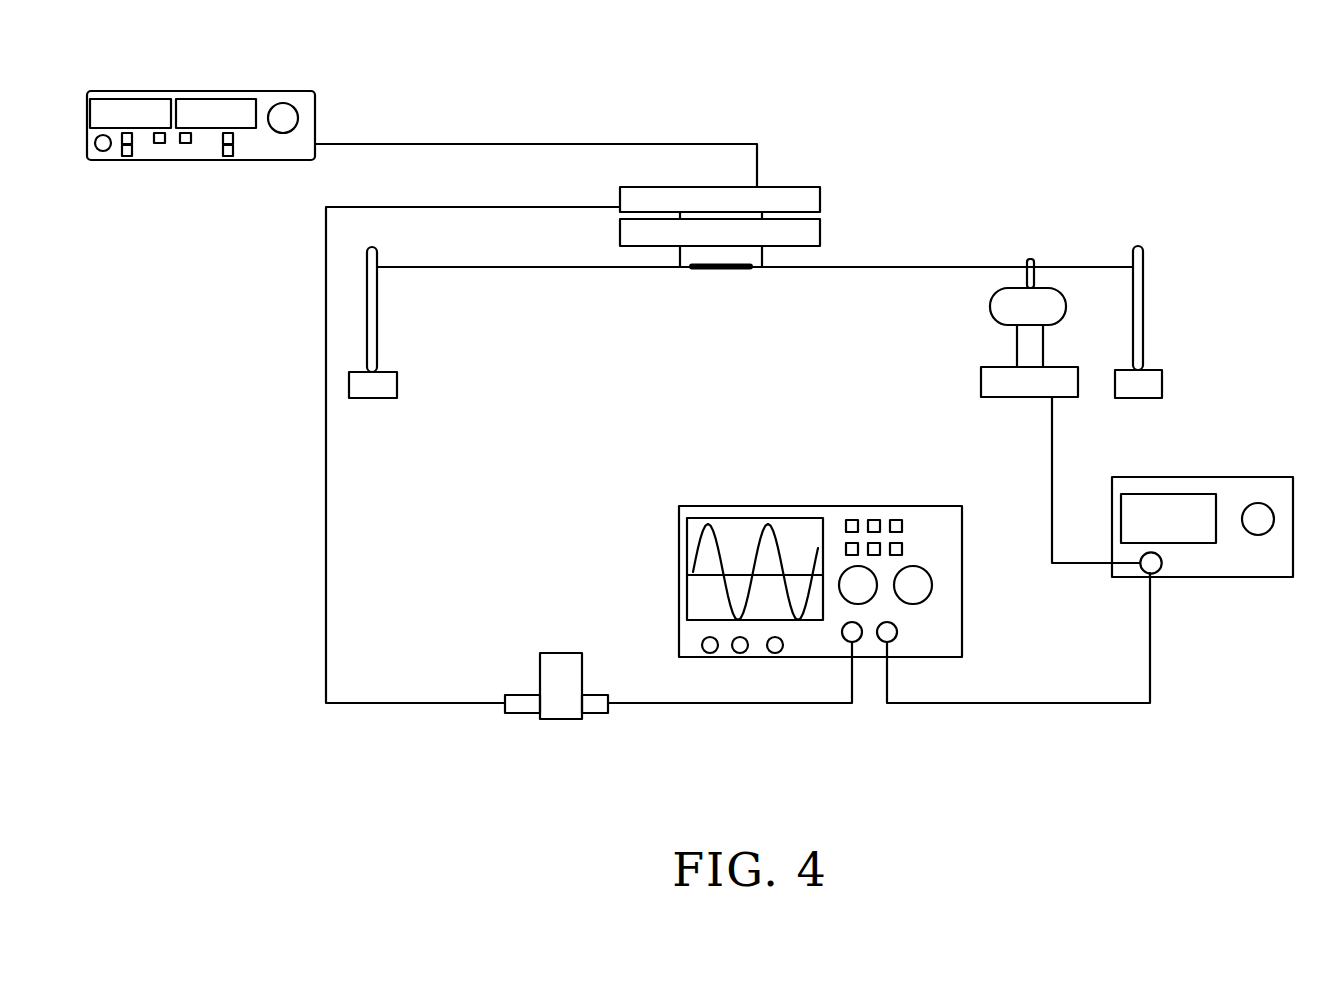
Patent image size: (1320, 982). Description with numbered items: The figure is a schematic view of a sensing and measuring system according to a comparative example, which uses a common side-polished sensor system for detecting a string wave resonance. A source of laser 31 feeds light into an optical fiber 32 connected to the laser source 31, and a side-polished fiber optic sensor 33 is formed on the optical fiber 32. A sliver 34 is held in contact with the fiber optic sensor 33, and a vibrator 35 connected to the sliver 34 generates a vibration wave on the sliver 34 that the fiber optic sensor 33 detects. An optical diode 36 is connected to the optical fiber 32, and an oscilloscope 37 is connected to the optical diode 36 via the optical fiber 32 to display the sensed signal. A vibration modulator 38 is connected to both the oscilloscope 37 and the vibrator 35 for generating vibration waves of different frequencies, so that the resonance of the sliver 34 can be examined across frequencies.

The source of laser 31 is at (282, 103).
The optical fiber 32 is at (661, 143).
The side-polished fiber optic sensor 33 is at (752, 265).
The sliver 34 is at (939, 267).
The vibrator 35 is at (1017, 345).
The optical diode 36 is at (552, 653).
The oscilloscope 37 is at (895, 520).
The vibration modulator 38 is at (1262, 477).